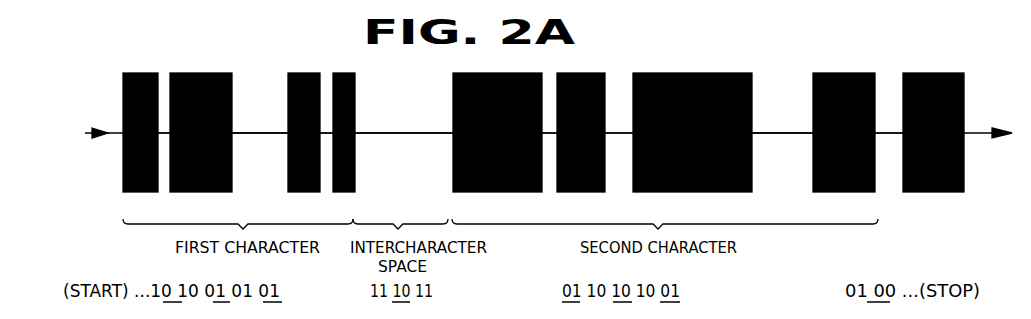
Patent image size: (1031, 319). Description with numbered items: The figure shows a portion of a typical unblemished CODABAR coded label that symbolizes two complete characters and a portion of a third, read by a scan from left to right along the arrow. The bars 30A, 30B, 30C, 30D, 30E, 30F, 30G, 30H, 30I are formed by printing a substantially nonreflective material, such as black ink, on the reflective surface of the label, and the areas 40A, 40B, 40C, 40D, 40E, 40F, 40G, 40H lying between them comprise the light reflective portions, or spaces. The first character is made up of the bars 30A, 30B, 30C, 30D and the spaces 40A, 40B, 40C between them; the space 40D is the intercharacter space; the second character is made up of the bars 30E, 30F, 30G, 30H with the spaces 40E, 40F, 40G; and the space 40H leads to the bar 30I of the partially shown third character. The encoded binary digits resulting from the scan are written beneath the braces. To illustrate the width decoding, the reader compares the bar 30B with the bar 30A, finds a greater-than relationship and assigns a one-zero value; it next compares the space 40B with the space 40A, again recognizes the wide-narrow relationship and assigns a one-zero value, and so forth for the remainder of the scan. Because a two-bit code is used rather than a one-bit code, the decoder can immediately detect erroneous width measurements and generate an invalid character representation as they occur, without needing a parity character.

The bar 30A is at (140, 119).
The bar 30B is at (201, 119).
The bar 30C is at (304, 119).
The bar 30D is at (343, 119).
The bar 30E is at (497, 119).
The bar 30F is at (581, 119).
The bar 30G is at (692, 119).
The bar 30H is at (844, 119).
The bar 30I is at (933, 119).
The space 40A is at (170, 174).
The space 40B is at (260, 174).
The space 40C is at (326, 174).
The space 40D is at (404, 174).
The space 40E is at (551, 174).
The space 40F is at (619, 174).
The space 40G is at (782, 174).
The space 40H is at (892, 174).